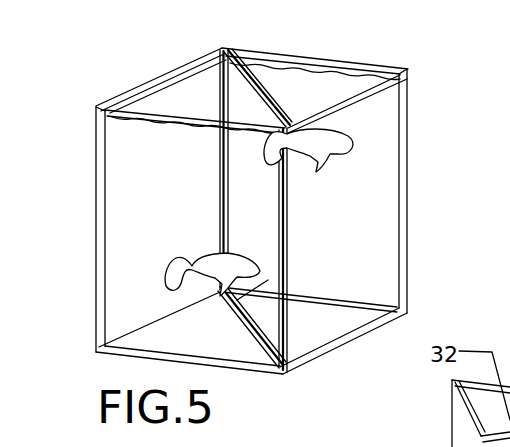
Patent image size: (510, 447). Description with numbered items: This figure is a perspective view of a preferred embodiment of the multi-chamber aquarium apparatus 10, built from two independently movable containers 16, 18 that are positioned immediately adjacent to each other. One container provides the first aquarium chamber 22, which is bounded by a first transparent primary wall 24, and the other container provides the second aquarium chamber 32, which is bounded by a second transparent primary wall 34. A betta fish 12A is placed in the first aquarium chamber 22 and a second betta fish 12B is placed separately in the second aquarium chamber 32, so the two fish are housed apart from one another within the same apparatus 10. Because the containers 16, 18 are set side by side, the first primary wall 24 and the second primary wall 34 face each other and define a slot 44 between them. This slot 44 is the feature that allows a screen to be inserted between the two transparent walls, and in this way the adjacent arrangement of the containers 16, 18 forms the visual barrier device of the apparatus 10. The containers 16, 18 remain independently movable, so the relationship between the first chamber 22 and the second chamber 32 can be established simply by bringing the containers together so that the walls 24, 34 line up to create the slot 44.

The multi-chamber aquarium apparatus 10 is at (183, 190).
The betta fish 12A is at (145, 248).
The betta fish 12B is at (379, 130).
The independently movable container 16 is at (57, 229).
The independently movable container 18 is at (407, 157).
The first aquarium chamber 22 is at (190, 68).
The first transparent primary wall 24 is at (113, 326).
The second aquarium chamber 32 is at (315, 72).
The second transparent primary wall 34 is at (266, 278).
The slot 44 is at (296, 333).